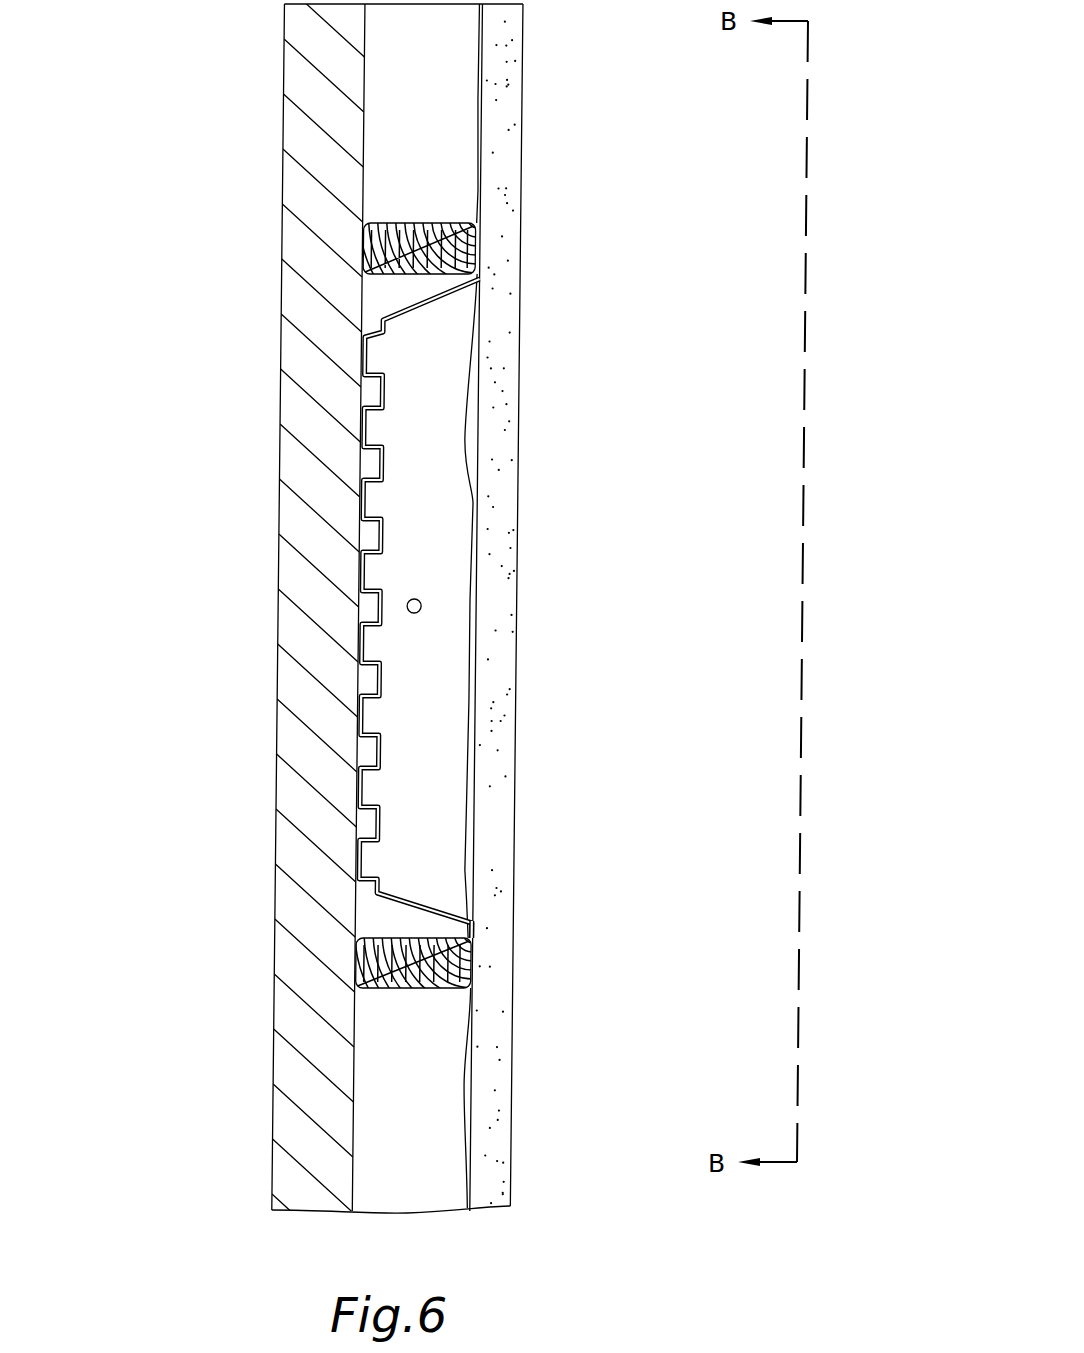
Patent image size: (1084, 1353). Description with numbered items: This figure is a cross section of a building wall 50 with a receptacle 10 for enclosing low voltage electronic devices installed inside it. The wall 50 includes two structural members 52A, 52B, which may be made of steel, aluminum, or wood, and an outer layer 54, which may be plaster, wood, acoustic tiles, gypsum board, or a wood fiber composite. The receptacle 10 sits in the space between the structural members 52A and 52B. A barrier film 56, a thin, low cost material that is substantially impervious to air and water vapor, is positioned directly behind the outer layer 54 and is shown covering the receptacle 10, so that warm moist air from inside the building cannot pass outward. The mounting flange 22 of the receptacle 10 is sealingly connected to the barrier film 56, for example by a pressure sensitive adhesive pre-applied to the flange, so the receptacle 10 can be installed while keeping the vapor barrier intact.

The receptacle 10 is at (385, 750).
The mounting flange 22 is at (472, 942).
The building wall 50 is at (565, 387).
The structural member 52A is at (472, 977).
The structural member 52B is at (472, 250).
The outer layer 54 is at (507, 529).
The barrier film 56 is at (465, 440).